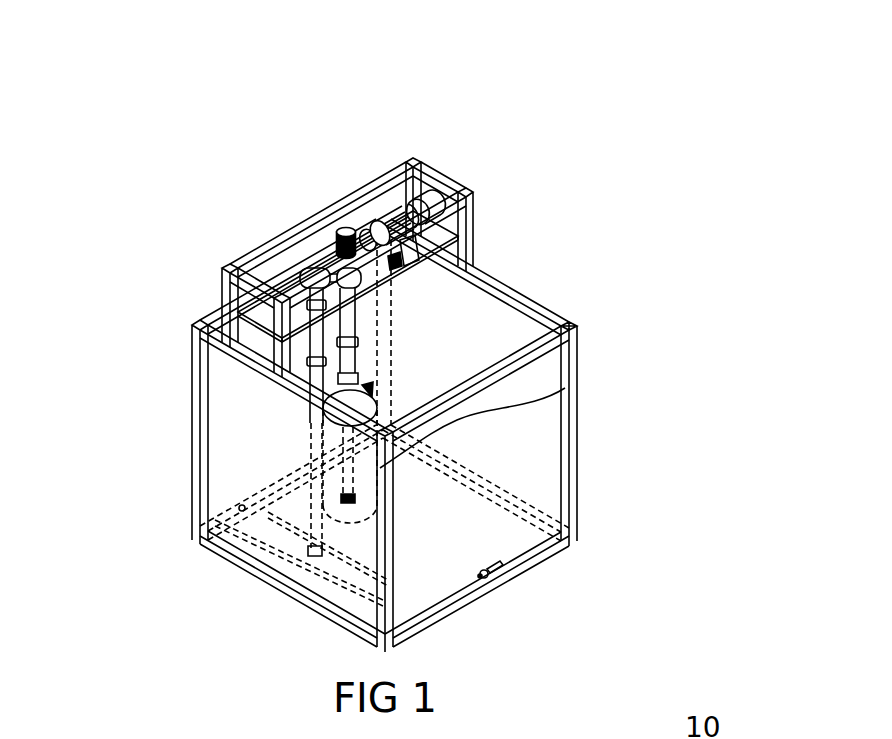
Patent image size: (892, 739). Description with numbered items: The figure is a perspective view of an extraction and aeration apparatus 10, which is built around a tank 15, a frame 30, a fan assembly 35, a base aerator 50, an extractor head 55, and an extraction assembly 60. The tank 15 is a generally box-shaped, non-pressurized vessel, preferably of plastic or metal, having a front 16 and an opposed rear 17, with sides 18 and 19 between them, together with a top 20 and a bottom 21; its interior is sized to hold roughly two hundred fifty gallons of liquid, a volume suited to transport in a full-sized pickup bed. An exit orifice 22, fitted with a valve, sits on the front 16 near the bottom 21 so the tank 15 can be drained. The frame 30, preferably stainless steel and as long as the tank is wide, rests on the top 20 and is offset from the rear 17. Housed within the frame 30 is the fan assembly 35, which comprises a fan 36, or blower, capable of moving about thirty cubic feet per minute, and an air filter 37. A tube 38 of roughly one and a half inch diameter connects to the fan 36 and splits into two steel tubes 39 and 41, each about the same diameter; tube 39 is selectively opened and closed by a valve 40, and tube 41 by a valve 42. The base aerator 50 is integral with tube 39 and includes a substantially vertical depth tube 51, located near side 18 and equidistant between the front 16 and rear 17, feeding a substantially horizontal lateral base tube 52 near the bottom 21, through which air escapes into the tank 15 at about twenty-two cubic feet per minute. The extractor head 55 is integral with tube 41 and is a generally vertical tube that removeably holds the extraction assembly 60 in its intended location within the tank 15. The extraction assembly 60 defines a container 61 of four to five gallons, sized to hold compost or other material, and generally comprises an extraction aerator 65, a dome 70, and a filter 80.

The extraction and aeration apparatus 10 is at (616, 191).
The tank 15 is at (578, 430).
The first side (front) 16 is at (520, 540).
The second side (rear) 17 is at (192, 342).
The side 18 is at (270, 546).
The side 19 is at (578, 388).
The top 20 is at (548, 302).
The bottom 21 is at (430, 620).
The exit orifice 22 is at (497, 582).
The frame 30 is at (473, 222).
The fan assembly 35 is at (420, 207).
The fan 36 is at (393, 212).
The air filter 37 is at (345, 233).
The tube 38 is at (310, 277).
The tube 39 is at (300, 280).
The valve 40 is at (280, 282).
The tube 41 is at (380, 320).
The valve 42 is at (386, 284).
The base aerator 50 is at (305, 368).
The depth tube 51 is at (290, 452).
The lateral base tube 52 is at (312, 555).
The extractor head 55 is at (392, 367).
The extraction assembly 60 is at (328, 410).
The container 61 is at (565, 388).
The extraction aerator 65 is at (376, 398).
The dome 70 is at (573, 327).
The filter 80 is at (350, 525).